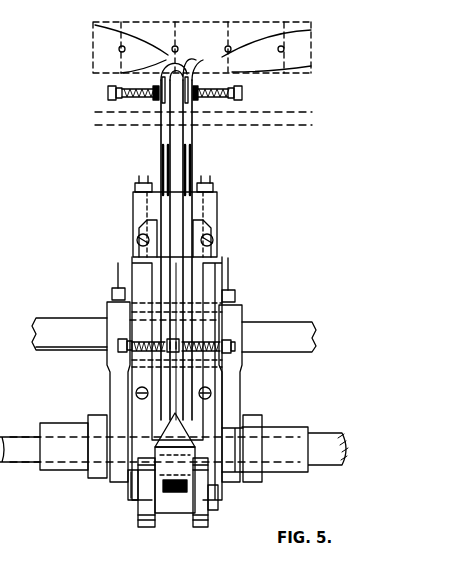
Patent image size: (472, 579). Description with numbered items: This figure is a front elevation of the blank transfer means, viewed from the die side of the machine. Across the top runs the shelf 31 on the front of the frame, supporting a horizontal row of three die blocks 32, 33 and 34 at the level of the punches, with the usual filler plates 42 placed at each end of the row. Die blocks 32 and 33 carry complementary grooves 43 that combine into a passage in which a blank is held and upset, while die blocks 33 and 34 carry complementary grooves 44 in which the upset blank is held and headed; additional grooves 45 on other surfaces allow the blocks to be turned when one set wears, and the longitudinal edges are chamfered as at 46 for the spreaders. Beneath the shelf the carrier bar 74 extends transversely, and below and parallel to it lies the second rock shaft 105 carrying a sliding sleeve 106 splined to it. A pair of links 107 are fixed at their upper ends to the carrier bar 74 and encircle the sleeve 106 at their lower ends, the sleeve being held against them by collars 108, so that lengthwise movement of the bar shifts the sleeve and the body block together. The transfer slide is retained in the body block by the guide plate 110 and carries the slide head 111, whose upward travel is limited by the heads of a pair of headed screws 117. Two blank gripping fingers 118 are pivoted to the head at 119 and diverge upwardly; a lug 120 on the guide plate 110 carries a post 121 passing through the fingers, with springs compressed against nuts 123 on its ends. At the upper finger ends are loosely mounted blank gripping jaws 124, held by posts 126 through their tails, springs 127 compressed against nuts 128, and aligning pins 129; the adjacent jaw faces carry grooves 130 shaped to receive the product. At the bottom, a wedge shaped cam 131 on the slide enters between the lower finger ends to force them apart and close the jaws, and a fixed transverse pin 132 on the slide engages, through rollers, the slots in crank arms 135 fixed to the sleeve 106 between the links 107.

The shelf 31 is at (203, 130).
The die block 32 is at (148, 47).
The die block 33 is at (213, 47).
The die block 34 is at (266, 50).
The filler plate 42 is at (202, 47).
The complementary recess or groove 43 is at (121, 73).
The complementary recess or groove 44 is at (311, 66).
The additional groove 45 is at (311, 30).
The chamfer 46 is at (93, 25).
The carrier bar 74 is at (174, 335).
The second rock shaft 105 is at (328, 433).
The sliding sleeve 106 is at (44, 446).
The link 107 is at (107, 303).
The collar 108 is at (95, 478).
The guide plate 110 is at (215, 265).
The slide head 111 is at (133, 209).
The headed screw 117 is at (205, 183).
The blank gripping finger 118 is at (188, 283).
The pivot 119 is at (145, 240).
The lug 120 is at (162, 362).
The post 121 is at (248, 355).
The nut 123 is at (115, 342).
The blank gripping jaw 124 is at (159, 132).
The post 126 is at (107, 91).
The spring 127 is at (152, 142).
The nut 128 is at (114, 100).
The aligning pin 129 is at (145, 148).
The groove 130 is at (194, 64).
The wedge shaped cam 131 is at (175, 463).
The transverse pin 132 is at (128, 494).
The crank arm 135 is at (138, 517).